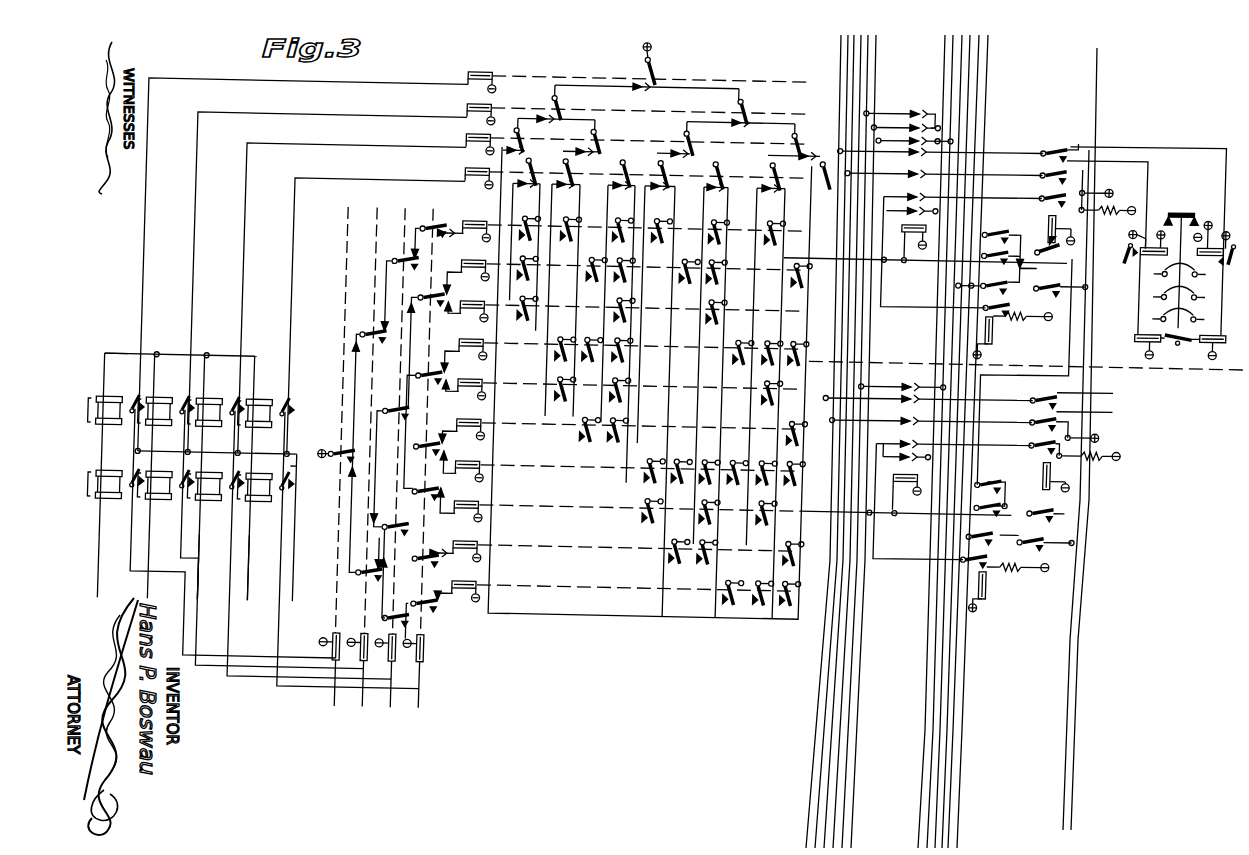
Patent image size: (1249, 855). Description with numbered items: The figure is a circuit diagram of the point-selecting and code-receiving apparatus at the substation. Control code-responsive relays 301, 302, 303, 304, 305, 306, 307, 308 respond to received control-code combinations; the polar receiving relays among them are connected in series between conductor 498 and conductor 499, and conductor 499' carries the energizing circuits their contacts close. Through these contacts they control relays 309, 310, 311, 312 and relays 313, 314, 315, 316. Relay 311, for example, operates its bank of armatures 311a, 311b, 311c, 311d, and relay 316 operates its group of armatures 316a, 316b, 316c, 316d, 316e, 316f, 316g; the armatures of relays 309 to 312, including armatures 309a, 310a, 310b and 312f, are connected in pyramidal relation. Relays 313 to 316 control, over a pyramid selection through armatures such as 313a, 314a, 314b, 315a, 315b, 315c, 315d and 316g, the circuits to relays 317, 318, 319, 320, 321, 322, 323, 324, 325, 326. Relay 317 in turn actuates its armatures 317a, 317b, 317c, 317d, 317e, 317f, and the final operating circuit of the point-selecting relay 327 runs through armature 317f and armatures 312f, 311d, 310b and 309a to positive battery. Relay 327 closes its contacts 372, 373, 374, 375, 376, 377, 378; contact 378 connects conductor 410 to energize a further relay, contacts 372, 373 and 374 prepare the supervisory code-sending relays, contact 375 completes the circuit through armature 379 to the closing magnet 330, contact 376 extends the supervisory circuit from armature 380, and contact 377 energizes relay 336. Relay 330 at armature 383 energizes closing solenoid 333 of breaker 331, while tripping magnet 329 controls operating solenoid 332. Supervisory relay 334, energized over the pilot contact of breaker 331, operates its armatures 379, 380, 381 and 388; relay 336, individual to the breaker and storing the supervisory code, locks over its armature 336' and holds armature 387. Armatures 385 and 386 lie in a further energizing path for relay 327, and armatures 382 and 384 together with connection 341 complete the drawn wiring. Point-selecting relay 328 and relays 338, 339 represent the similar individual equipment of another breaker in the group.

The control code-responsive relay 301 is at (112, 404).
The control code-responsive relay 302 is at (114, 478).
The control code-responsive relay 303 is at (166, 404).
The control code-responsive relay 304 is at (164, 479).
The polar receiving relay 305 is at (214, 404).
The polar receiving relay 306 is at (214, 480).
The polar receiving relay 307 is at (264, 404).
The polar receiving relay 308 is at (264, 481).
The relay 309 is at (480, 73).
The armature of relay 309 309a is at (649, 70).
The relay 310 is at (486, 103).
The switch 310a is at (557, 106).
The armature of relay 310 310b is at (744, 106).
The relay 311 is at (486, 133).
The armature of relay 311 311a is at (521, 137).
The armature of relay 311 311b is at (612, 141).
The armature of relay 311 311c is at (691, 140).
The armature of relay 311 311d is at (800, 138).
The relay 312 is at (486, 167).
The armature of relay 312 312f is at (820, 170).
The relay 313 is at (348, 640).
The armature of relay 313 313a is at (340, 454).
The relay 314 is at (377, 640).
The contact 314a is at (372, 575).
The armature of relay 314 314b is at (370, 332).
The relay 315 is at (407, 665).
The contact 315a is at (400, 618).
The contact 315b is at (398, 526).
The contact 315c is at (396, 417).
The armature of relay 315 315d is at (402, 258).
The relay 316 is at (436, 668).
The armature of relay 316 316a is at (428, 603).
The armature of relay 316 316b is at (430, 556).
The armature of relay 316 316c is at (426, 492).
The armature of relay 316 316d is at (428, 452).
The armature of relay 316 316e is at (428, 374).
The armature of relay 316 316f is at (428, 302).
The armature of relay 316 316g is at (434, 226).
The relay 317 is at (475, 221).
The armature of relay 317 317a is at (522, 219).
The armature of relay 317 317b is at (565, 221).
The armature of relay 317 317c is at (618, 222).
The armature of relay 317 317d is at (657, 225).
The armature of relay 317 317e is at (713, 224).
The armature of relay 317 317f is at (770, 224).
The relay 318 is at (473, 252).
The relay 319 is at (470, 296).
The relay 320 is at (468, 336).
The relay 321 is at (466, 381).
The relay 322 is at (463, 421).
The relay 323 is at (464, 463).
The relay 324 is at (461, 503).
The relay 325 is at (465, 543).
The relay 326 is at (463, 583).
The point-selecting relay 327 is at (915, 252).
The point-selecting relay 328 is at (912, 505).
The tripping magnet 329 is at (1148, 250).
The closing magnet 330 is at (1222, 230).
The circuit breaker 331 is at (1128, 311).
The operating solenoid 332 is at (1142, 336).
The closing solenoid 333 is at (1220, 336).
The supervisory relay 334 is at (1068, 237).
The relay 336 is at (1012, 336).
The first armature of relay 336 336' is at (1007, 310).
The relay 338 is at (1060, 477).
The relay 339 is at (1008, 588).
The conductor 341 is at (142, 386).
The contact of relay 327 372 is at (899, 110).
The contact of relay 327 373 is at (905, 123).
The contact of relay 327 374 is at (914, 137).
The contact of relay 327 375 is at (941, 149).
The contact of relay 327 376 is at (914, 172).
The contact of relay 327 377 is at (963, 198).
The contact of relay 327 378 is at (912, 213).
The armature of relay 334 379 is at (1048, 144).
The armature of relay 334 380 is at (1046, 167).
The armature of relay 334 381 is at (1046, 190).
The switch 382 is at (1119, 253).
The armature of relay 330 383 is at (1229, 263).
The switch 384 is at (992, 226).
The armature 385 is at (1039, 235).
The armature 386 is at (983, 253).
The armature of relay 336 387 is at (981, 282).
The armature of relay 334 388 is at (1049, 283).
The conductor 410 is at (933, 719).
The conductor 498 is at (256, 560).
The conductor 499 is at (204, 565).
The conductor 499' is at (307, 534).